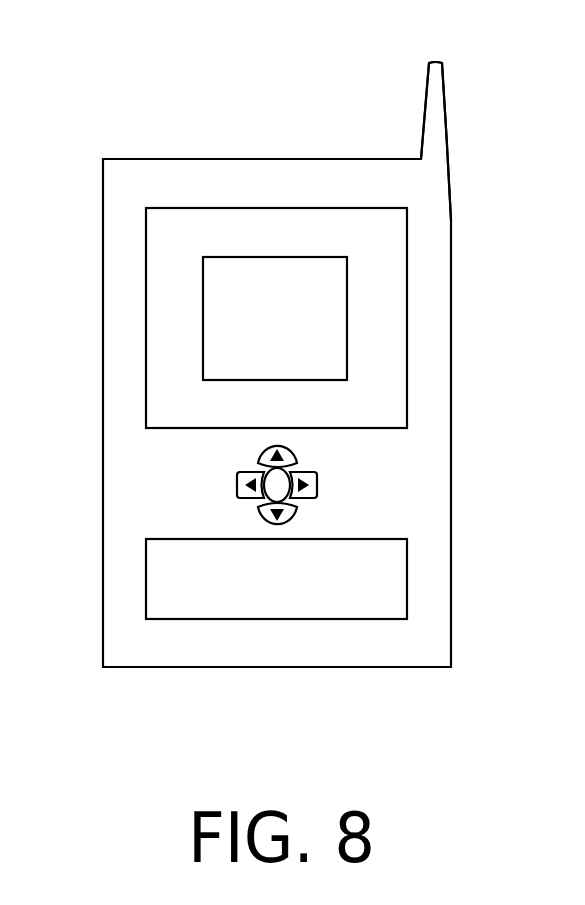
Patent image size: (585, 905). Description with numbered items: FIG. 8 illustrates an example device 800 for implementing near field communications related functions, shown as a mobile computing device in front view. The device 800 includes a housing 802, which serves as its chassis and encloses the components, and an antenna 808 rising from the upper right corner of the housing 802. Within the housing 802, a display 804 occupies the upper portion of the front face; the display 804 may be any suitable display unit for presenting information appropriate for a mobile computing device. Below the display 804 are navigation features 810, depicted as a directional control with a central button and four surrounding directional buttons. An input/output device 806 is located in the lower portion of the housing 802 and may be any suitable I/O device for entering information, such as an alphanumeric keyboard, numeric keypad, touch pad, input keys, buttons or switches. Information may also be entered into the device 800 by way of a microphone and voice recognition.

The device 800 is at (296, 345).
The housing 802 is at (454, 413).
The display 804 is at (411, 231).
The input/output (I/O) device 806 is at (412, 573).
The antenna 808 is at (420, 104).
The navigation features 810 is at (321, 486).